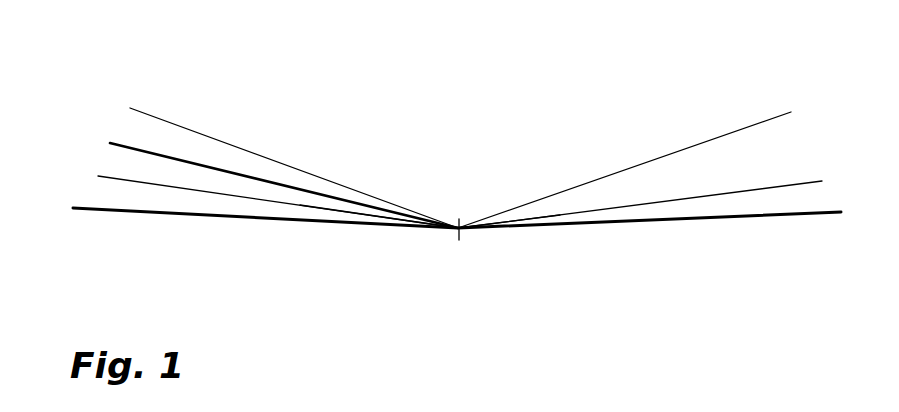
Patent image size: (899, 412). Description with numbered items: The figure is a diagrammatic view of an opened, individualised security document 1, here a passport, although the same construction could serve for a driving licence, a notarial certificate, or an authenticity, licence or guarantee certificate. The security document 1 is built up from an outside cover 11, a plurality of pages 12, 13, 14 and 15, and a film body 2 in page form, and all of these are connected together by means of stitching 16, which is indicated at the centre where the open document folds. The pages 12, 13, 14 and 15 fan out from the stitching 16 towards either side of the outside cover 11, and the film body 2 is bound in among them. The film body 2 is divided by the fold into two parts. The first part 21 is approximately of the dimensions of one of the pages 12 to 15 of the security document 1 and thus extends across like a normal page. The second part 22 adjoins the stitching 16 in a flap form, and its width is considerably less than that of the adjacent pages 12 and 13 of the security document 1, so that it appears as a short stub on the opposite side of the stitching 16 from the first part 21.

The security document 1 is at (525, 117).
The film body 2 is at (120, 142).
The outside cover 11 is at (782, 217).
The page 12 is at (795, 185).
The page 13 is at (762, 122).
The page 14 is at (95, 176).
The page 15 is at (253, 151).
The stitching 16 is at (460, 213).
The part of film body 21 is at (340, 201).
The part of film body 22 is at (522, 213).